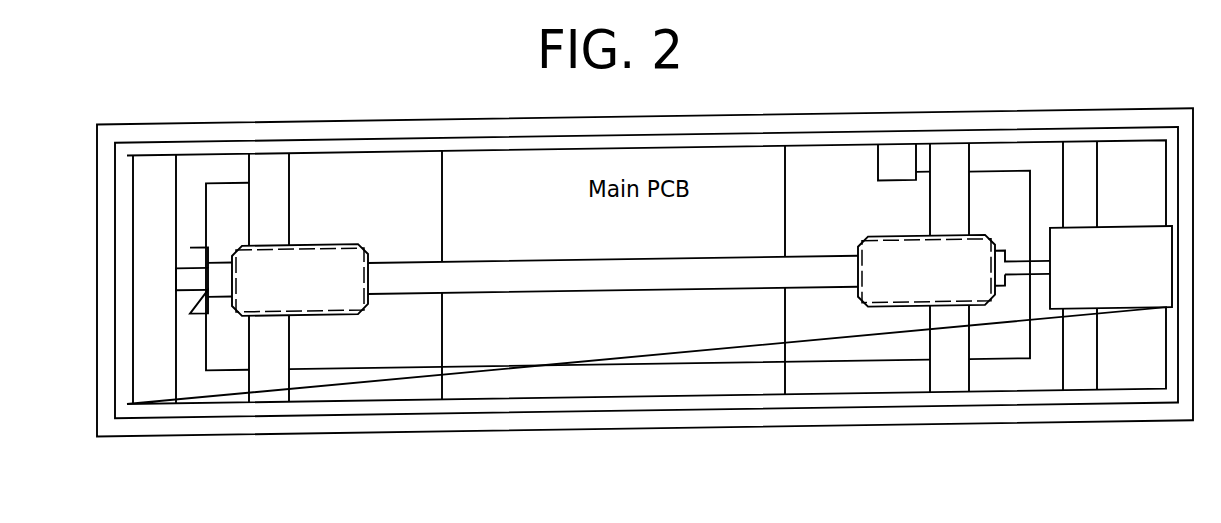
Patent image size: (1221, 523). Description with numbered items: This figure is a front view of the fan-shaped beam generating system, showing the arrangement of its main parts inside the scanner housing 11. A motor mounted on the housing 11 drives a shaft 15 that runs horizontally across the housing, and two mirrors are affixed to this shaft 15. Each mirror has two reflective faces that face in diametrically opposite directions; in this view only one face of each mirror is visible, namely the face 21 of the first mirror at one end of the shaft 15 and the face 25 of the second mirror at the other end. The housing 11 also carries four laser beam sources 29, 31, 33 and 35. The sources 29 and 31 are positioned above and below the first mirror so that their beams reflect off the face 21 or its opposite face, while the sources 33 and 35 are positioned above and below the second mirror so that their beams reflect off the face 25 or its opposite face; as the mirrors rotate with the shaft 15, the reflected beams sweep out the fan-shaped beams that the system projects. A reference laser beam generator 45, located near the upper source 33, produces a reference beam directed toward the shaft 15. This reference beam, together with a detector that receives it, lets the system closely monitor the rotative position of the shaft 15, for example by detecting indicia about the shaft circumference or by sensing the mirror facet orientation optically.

The scanner housing 11 is at (525, 433).
The shaft 15 is at (535, 273).
The reflective face 21 is at (317, 297).
The reflective face 25 is at (943, 282).
The laser beam source 29 is at (270, 162).
The laser beam source 31 is at (272, 392).
The laser beam source 33 is at (957, 152).
The laser beam source 35 is at (952, 385).
The reference laser beam generator 45 is at (898, 152).